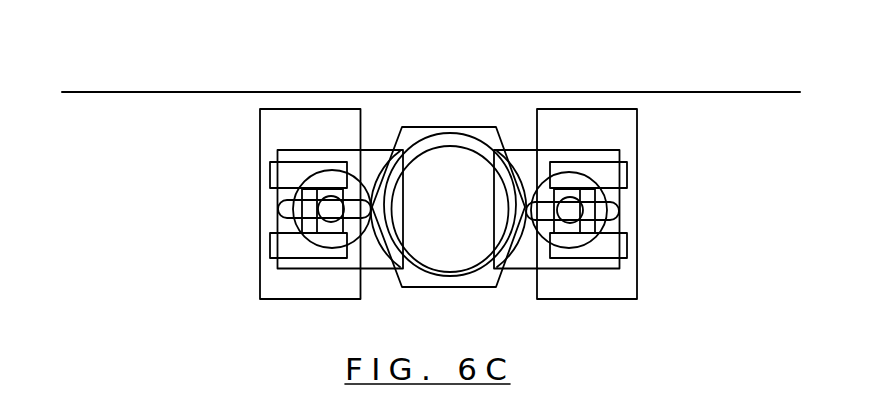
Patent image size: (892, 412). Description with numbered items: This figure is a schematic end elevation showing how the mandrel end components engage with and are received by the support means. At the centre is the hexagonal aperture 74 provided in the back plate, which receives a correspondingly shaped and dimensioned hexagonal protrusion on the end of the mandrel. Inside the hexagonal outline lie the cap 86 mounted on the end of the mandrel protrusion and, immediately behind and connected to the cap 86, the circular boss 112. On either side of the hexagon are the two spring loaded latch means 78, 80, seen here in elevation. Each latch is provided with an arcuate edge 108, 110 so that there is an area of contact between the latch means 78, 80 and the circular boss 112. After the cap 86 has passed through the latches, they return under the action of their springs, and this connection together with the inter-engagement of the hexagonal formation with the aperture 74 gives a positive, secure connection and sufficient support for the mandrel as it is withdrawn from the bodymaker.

The hexagonal aperture 74 is at (405, 127).
The spring loaded latch means 78 is at (333, 158).
The spring loaded latch means 80 is at (546, 154).
The cap 86 is at (468, 142).
The arcuate edge 108 is at (363, 150).
The arcuate edge 110 is at (508, 152).
The circular boss 112 is at (452, 165).